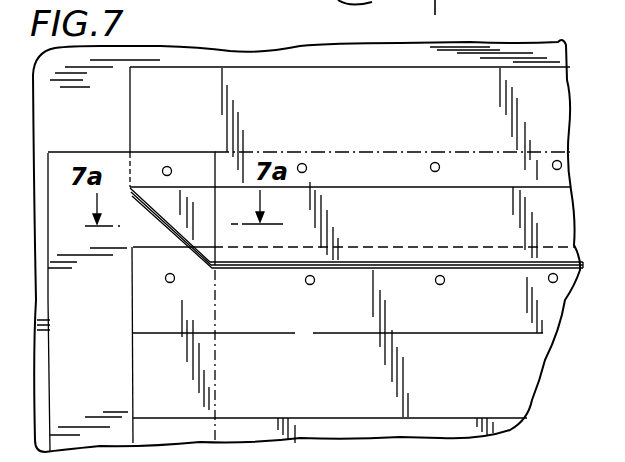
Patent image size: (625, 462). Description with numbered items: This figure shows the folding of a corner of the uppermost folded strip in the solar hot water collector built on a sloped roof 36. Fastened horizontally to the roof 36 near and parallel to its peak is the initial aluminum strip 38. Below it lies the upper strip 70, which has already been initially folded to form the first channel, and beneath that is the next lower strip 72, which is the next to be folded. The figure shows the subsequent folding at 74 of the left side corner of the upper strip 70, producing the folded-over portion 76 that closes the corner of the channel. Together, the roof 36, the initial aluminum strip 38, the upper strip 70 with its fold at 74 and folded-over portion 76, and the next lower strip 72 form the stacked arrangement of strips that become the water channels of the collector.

The roof 36 is at (58, 90).
The initial aluminum strip 38 is at (560, 97).
The upper strip 70 is at (563, 205).
The next lower strip 72 is at (523, 368).
The fold 74 is at (137, 208).
The folded-over portion 76 is at (207, 228).